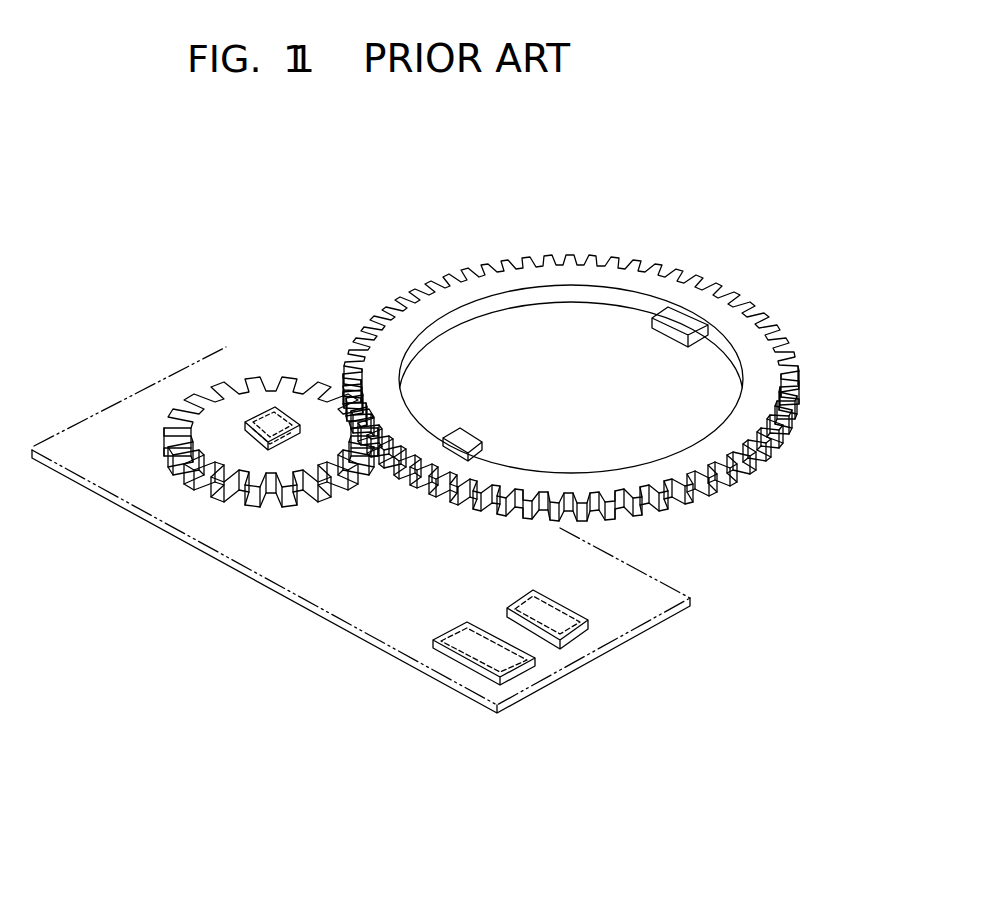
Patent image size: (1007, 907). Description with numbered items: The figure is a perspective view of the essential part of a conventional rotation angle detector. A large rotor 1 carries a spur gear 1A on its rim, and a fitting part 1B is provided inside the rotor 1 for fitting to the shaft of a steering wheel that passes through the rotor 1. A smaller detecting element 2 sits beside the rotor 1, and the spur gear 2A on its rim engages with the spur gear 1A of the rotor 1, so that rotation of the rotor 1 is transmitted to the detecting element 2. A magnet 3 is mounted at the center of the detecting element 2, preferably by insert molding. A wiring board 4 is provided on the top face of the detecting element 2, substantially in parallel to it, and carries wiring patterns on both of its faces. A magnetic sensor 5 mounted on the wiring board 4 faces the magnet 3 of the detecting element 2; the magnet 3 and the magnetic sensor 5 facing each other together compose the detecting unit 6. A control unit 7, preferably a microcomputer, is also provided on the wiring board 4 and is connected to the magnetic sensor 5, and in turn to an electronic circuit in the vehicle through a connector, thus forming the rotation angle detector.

The rotor 1 is at (571, 387).
The spur gear 1A is at (698, 503).
The fitting part 1B is at (683, 322).
The detecting element 2 is at (264, 378).
The spur gear 2A is at (242, 390).
The magnet 3 is at (247, 440).
The wiring board 4 is at (380, 600).
The magnetic sensor 5 is at (245, 424).
The detecting unit 6 is at (173, 511).
The control unit 7 is at (553, 655).